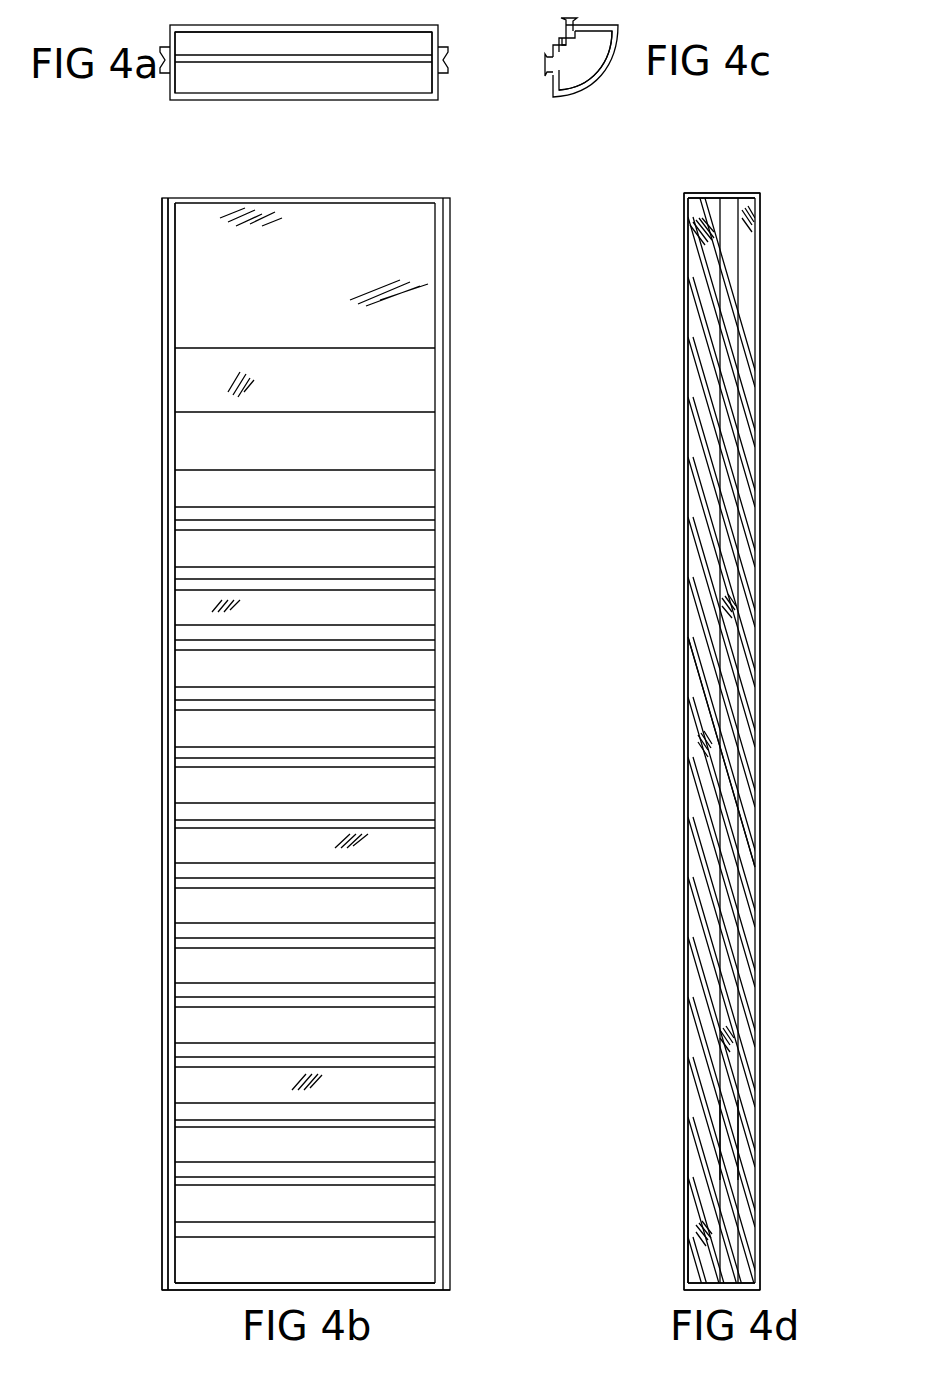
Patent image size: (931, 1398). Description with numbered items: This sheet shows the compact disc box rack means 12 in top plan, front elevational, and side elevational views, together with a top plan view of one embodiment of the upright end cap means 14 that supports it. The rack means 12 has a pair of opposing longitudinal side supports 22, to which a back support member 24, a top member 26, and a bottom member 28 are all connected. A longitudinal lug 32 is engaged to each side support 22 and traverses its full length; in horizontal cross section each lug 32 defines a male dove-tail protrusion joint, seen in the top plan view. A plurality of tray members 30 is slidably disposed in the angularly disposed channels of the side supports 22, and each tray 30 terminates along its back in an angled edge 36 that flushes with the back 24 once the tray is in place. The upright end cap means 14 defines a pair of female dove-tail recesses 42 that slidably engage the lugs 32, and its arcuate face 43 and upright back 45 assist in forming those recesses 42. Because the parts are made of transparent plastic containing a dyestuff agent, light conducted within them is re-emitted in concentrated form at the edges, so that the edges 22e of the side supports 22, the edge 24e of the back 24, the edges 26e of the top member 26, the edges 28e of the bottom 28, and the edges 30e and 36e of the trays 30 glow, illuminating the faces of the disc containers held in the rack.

In FIG. 4A, the rack means 12 is at (229, 127).
In FIG. 4B, the rack means 12 is at (145, 440).
In FIG. 4D, the rack means 12 is at (668, 352).
In FIG. 4C, the upright end cap means 14 is at (613, 77).
In FIG. 4A, the longitudinal side support 22 is at (167, 68).
In FIG. 4B, the longitudinal side support 22 is at (175, 613).
In FIG. 4D, the longitudinal side support 22 is at (695, 256).
In FIG. 4B, the edge of side support 22e is at (175, 790).
In FIG. 4D, the back support member 24 is at (760, 287).
In FIG. 4D, the edge of back 24e is at (750, 372).
In FIG. 4A, the top member 26 is at (407, 46).
In FIG. 4D, the top member 26 is at (713, 193).
In FIG. 4D, the edge of top member 26e is at (688, 1183).
In FIG. 4B, the bottom member 28 is at (430, 1290).
In FIG. 4D, the bottom member 28 is at (700, 1290).
In FIG. 4B, the edge of bottom member 28e is at (405, 1283).
In FIG. 4A, the tray member 30 is at (312, 84).
In FIG. 4B, the edge of tray 30e is at (400, 882).
In FIG. 4D, the edge of tray 30e is at (690, 466).
In FIG. 4A, the longitudinal lug 32 is at (167, 91).
In FIG. 4B, the longitudinal lug 32 is at (162, 551).
In FIG. 4D, the longitudinal lug 32 is at (735, 1143).
In FIG. 4D, the angled edge 36 is at (737, 527).
In FIG. 4D, the edge of angled tray edge 36e is at (736, 512).
In FIG. 4C, the female dove-tail recess 42 is at (586, 24).
In FIG. 4C, the arcuate face 43 is at (590, 92).
In FIG. 4C, the upright back 45 is at (558, 26).